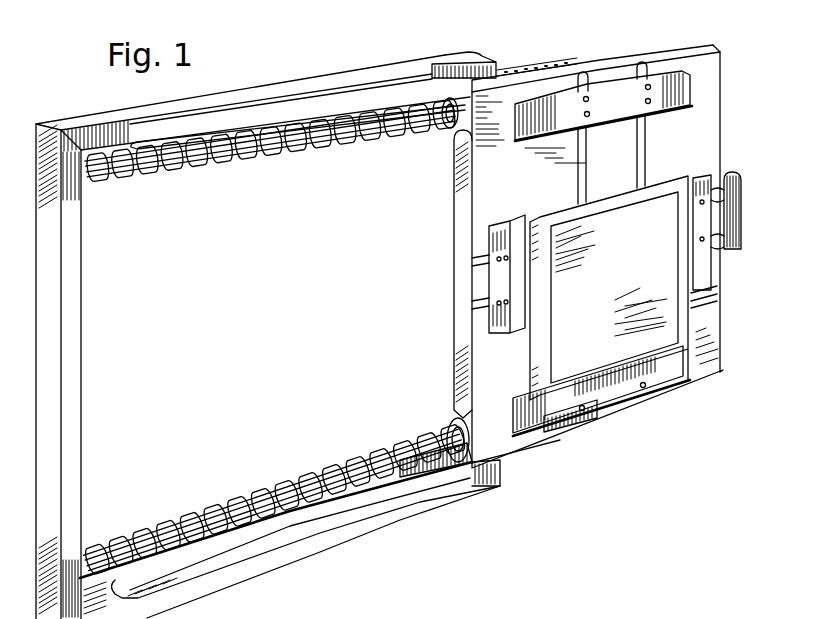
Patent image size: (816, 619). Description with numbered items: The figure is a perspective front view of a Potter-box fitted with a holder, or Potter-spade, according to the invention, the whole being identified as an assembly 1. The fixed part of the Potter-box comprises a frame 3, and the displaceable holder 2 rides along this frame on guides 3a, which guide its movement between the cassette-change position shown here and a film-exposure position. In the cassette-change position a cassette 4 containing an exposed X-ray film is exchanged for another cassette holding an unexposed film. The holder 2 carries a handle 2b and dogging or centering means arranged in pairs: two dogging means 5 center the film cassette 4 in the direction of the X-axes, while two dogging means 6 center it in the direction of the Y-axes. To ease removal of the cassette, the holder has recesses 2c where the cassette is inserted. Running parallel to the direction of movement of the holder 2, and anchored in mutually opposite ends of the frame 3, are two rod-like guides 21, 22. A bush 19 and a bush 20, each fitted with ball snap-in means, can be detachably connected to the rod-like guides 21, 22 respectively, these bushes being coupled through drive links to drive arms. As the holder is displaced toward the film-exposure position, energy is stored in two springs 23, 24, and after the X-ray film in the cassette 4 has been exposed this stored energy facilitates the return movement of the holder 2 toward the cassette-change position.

The assembly 1 is at (505, 495).
The holder or Potter-spade 2 is at (601, 439).
The handle 2b is at (741, 206).
The recesses 2c is at (702, 303).
The frame 3 is at (389, 539).
The guides 3a is at (210, 134).
The cassette 4 is at (677, 347).
The dogging means 5 is at (499, 276).
The dogging means 6 is at (684, 87).
The bush 19 is at (446, 430).
The bush 20 is at (459, 128).
The rod-like guide 21 is at (176, 532).
The rod-like guide 22 is at (285, 147).
The spring 23 is at (248, 493).
The spring 24 is at (352, 143).